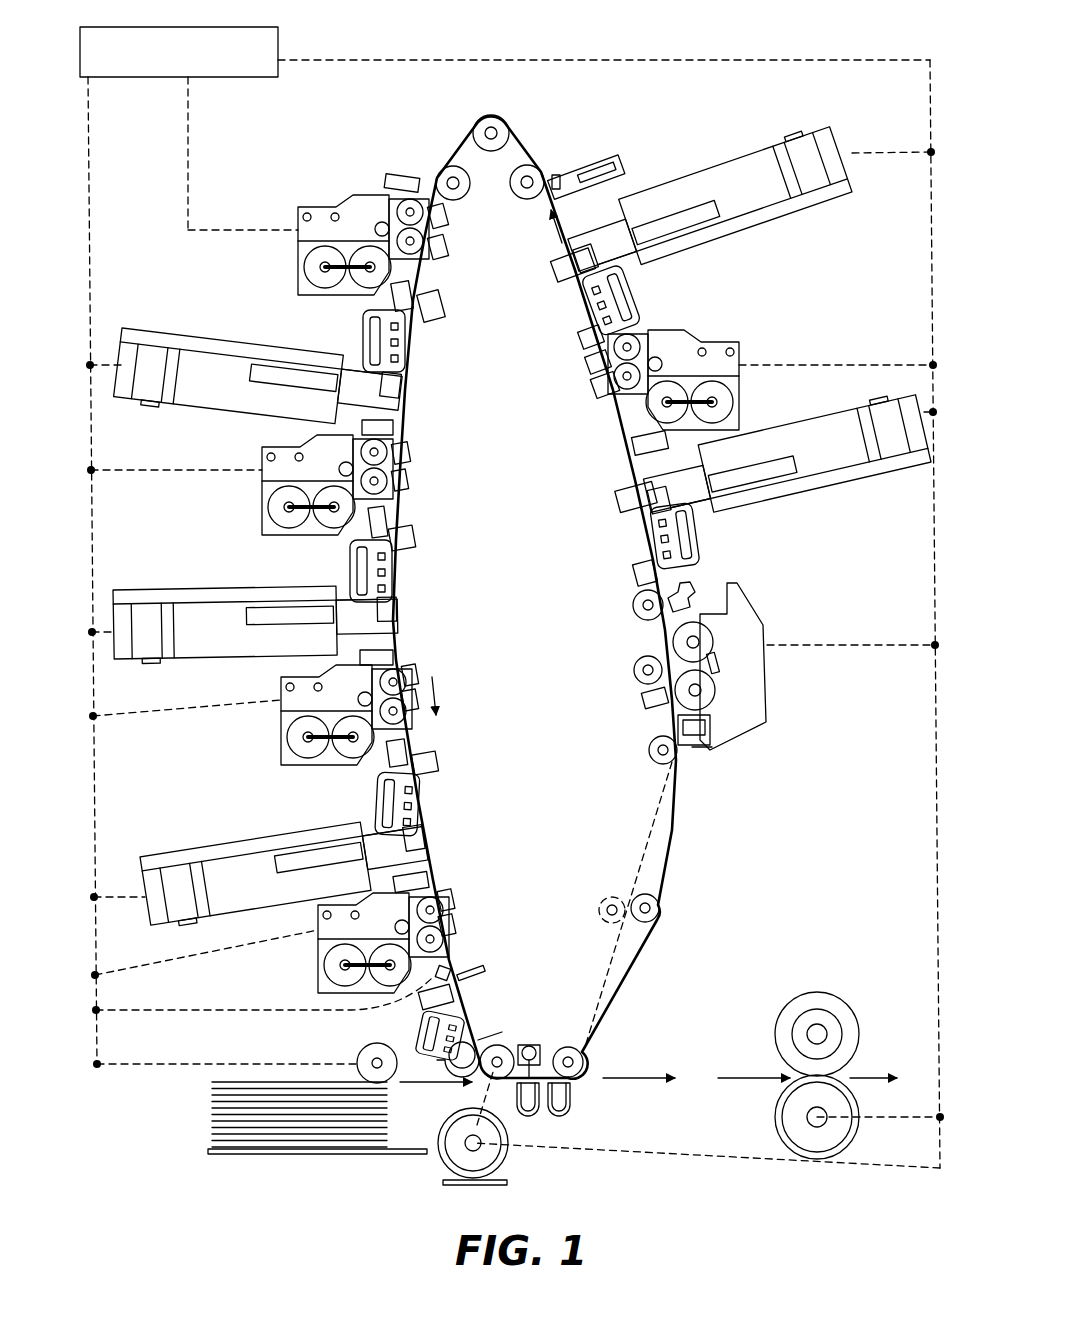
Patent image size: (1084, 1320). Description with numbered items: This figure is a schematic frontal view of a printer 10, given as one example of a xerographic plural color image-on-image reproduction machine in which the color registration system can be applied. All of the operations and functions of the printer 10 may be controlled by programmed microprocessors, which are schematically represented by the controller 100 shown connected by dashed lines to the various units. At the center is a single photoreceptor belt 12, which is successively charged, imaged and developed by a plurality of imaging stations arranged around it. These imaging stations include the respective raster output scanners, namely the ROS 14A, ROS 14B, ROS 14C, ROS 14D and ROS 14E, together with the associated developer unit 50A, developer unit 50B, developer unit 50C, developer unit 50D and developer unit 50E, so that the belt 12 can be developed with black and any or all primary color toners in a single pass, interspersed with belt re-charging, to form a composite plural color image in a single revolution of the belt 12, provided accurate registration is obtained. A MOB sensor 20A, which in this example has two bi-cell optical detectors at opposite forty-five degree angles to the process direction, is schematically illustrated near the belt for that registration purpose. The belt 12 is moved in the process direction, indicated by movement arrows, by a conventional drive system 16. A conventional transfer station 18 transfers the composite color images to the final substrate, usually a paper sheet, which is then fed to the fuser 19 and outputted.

The printer 10 is at (614, 56).
The photoreceptor belt 12 is at (633, 966).
The ROS 14A is at (173, 855).
The ROS 14B is at (170, 595).
The ROS 14C is at (179, 330).
The ROS 14D is at (705, 177).
The ROS 14E is at (790, 430).
The drive system 16 is at (455, 1160).
The transfer station 18 is at (559, 1130).
The fuser 19 is at (873, 1050).
The MOB sensor 20A is at (458, 980).
The developer unit 50A is at (360, 993).
The developer unit 50B is at (307, 765).
The developer unit 50C is at (302, 532).
The developer unit 50D is at (322, 297).
The developer unit 50E is at (740, 345).
The controller 100 is at (279, 44).